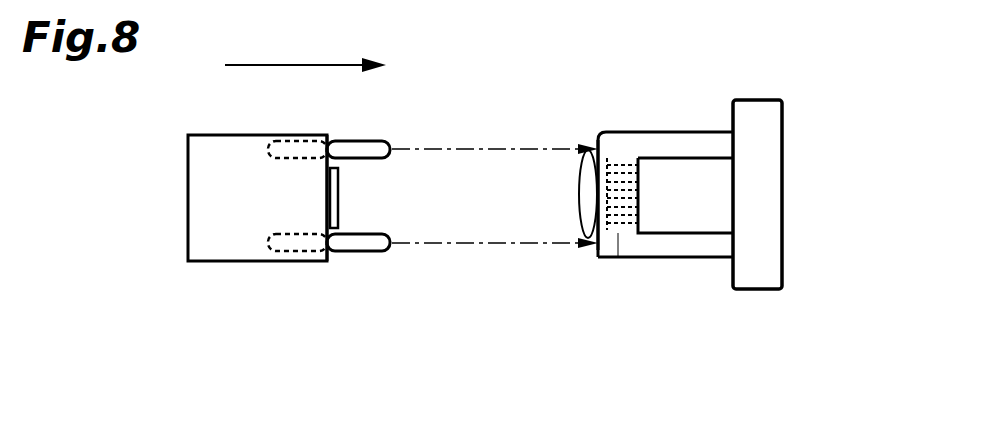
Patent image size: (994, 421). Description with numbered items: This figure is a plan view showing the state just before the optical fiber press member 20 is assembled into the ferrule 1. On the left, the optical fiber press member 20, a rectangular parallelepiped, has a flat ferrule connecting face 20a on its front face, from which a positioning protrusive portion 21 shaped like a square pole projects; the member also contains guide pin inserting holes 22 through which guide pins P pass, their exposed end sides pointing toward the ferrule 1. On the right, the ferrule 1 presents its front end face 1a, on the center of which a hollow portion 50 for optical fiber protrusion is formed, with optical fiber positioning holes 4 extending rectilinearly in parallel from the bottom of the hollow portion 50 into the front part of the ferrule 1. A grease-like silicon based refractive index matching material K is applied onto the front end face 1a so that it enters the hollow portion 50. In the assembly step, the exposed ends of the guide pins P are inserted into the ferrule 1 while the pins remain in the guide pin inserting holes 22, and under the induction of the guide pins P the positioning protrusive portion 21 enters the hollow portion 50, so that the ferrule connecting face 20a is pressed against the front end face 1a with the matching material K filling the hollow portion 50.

The ferrule 1 is at (808, 113).
The front end face 1a is at (598, 150).
The optical fiber positioning hole 4 is at (619, 236).
The optical fiber press member 20 is at (224, 276).
The ferrule connecting face 20a is at (332, 160).
The positioning protrusive portion 21 is at (338, 200).
The guide pin inserting hole 22 is at (289, 137).
The hollow portion 50 is at (610, 158).
The refractive index matching material K is at (582, 175).
The guide pin P is at (392, 150).